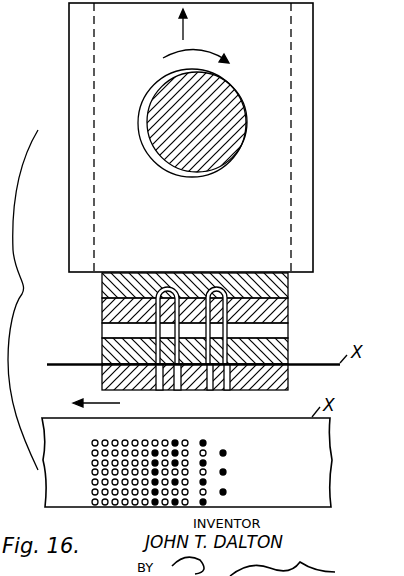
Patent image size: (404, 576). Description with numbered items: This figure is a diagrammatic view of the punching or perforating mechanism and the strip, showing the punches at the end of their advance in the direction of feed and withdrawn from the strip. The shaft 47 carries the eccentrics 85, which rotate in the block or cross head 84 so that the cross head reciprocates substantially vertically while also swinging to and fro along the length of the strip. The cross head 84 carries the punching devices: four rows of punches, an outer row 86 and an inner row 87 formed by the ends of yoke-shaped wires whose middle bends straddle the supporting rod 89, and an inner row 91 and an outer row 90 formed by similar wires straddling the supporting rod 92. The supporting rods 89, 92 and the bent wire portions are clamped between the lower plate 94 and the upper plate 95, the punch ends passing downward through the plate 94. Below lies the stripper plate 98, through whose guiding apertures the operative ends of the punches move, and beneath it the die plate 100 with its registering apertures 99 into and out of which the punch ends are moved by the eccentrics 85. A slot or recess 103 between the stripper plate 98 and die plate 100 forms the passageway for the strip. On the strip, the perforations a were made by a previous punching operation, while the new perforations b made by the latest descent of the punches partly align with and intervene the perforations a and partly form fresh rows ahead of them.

The block or cross head 84 is at (313, 100).
The shaft 47 is at (240, 115).
The eccentrics 85 is at (150, 157).
The supporting rod 89 is at (173, 288).
The supporting rod 92 is at (219, 290).
The upper plate 95 is at (289, 289).
The plate 94 is at (289, 312).
The row of punches or perforating pins 86 is at (150, 330).
The row of punches or perforating pins 87 is at (190, 333).
The row of punches or perforating pins 91 is at (212, 333).
The row of punches or perforating pins 90 is at (232, 333).
The stripper plate 98 is at (102, 345).
The slot or recess 103 is at (288, 361).
The die plate 100 is at (102, 372).
The registering apertures 99 is at (208, 392).
The perforations a is at (153, 440).
The new perforations b is at (157, 450).